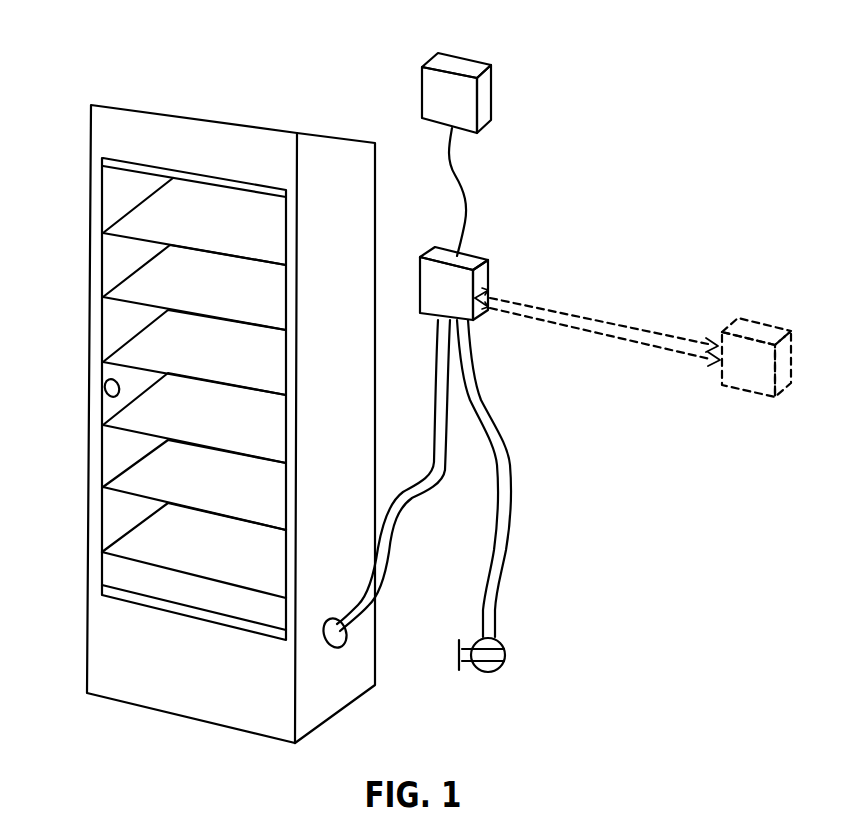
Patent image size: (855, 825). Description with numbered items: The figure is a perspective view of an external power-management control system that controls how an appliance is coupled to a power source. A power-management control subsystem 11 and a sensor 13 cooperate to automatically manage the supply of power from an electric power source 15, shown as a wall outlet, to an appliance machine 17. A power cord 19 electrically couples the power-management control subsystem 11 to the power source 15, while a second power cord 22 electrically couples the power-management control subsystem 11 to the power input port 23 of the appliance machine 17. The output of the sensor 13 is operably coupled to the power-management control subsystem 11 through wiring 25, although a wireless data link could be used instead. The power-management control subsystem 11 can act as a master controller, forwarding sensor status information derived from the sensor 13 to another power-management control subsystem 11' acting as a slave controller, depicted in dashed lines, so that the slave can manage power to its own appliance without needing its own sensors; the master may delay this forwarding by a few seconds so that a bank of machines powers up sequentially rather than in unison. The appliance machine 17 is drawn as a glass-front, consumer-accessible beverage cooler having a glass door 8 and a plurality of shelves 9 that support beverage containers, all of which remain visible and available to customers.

The glass door 8 is at (98, 462).
The shelves 9 is at (145, 222).
The appliance machine 17 is at (352, 400).
The sensor 13 is at (453, 63).
The wiring 25 is at (465, 190).
The power-management control subsystem 11 is at (438, 258).
The slave power-management control subsystem 11' is at (646, 337).
The power cord 19 is at (508, 473).
The power cord 22 is at (427, 492).
The power input port 23 is at (333, 648).
The electric power source 15 is at (505, 652).